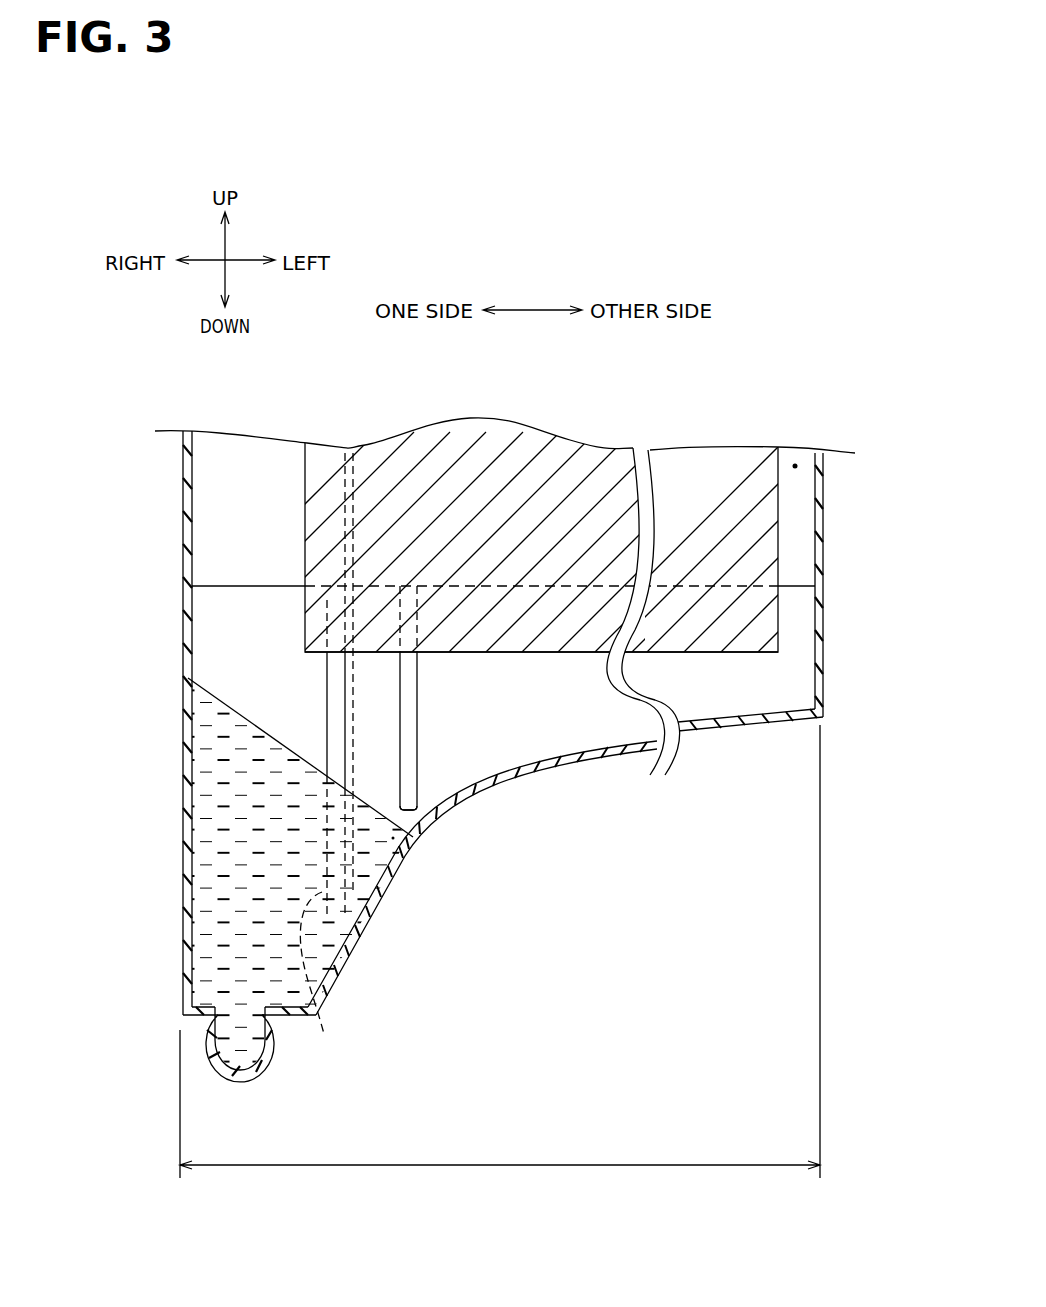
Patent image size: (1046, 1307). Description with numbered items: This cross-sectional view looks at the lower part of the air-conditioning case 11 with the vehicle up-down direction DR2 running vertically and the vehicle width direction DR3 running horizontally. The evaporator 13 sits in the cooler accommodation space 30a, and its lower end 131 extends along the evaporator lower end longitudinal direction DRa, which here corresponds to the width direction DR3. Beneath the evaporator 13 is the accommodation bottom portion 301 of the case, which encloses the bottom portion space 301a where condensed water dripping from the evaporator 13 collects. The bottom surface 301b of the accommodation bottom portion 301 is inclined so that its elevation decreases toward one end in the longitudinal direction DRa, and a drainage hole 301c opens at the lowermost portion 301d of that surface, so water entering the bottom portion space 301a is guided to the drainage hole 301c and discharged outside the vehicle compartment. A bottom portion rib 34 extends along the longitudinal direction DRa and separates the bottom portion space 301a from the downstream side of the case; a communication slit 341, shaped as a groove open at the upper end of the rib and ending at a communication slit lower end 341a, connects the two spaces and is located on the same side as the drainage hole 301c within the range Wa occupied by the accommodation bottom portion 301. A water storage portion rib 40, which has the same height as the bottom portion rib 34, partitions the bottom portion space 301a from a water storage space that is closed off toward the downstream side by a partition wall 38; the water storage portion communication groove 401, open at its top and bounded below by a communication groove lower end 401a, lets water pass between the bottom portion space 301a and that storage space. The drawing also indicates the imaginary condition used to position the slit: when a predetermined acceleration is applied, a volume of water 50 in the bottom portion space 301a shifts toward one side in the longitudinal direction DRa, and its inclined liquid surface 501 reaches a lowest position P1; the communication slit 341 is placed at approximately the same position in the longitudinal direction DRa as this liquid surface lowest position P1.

The air-conditioning case 11 is at (86, 758).
The evaporator 13 is at (722, 473).
The lower end 131 is at (738, 652).
The cooler accommodation space 30a is at (795, 466).
The accommodation bottom portion 301 is at (838, 508).
The bottom portion space 301a is at (558, 733).
The bottom surface 301b is at (514, 762).
The drainage hole 301c is at (250, 1065).
The lowermost portion 301d is at (197, 1007).
The bottom portion rib 34 is at (790, 598).
The communication slit 341 is at (417, 713).
The communication slit lower end 341a is at (392, 842).
The partition wall 38 is at (353, 485).
The water storage portion rib 40 is at (215, 600).
The water storage portion communication groove 401 is at (330, 702).
The communication groove lower end 401a is at (329, 979).
The water 50 is at (212, 808).
The liquid surface 501 is at (222, 702).
The liquid surface lowest position P1 is at (393, 840).
The range Wa is at (507, 1168).
The up-down direction DR2 is at (228, 238).
The width direction DR3 is at (240, 258).
The evaporator lower end longitudinal direction DRa is at (528, 310).